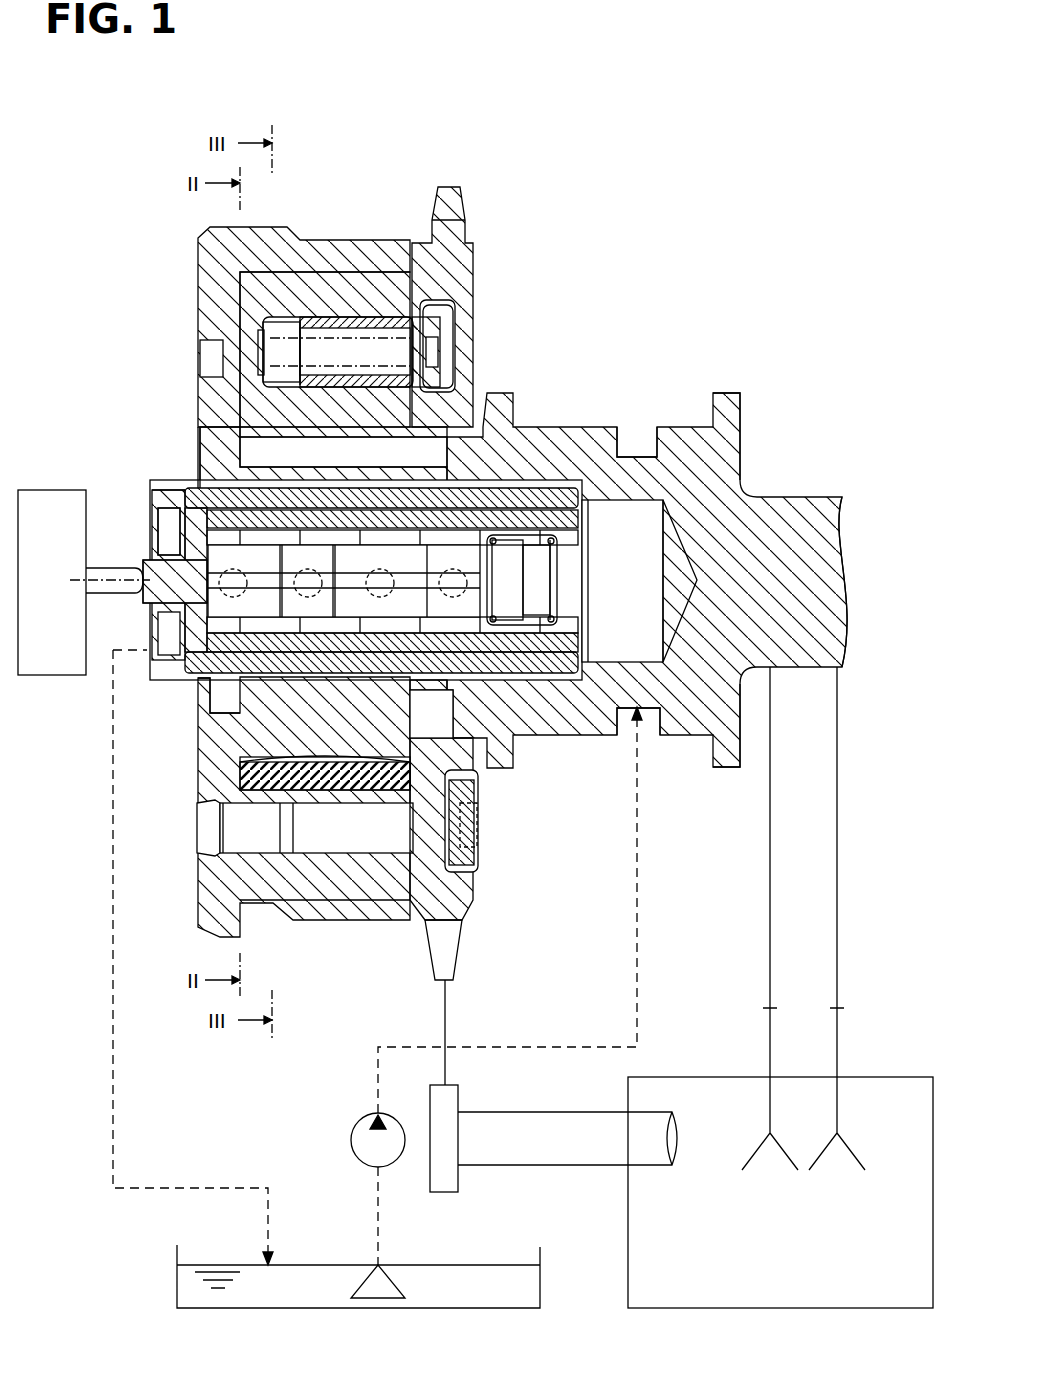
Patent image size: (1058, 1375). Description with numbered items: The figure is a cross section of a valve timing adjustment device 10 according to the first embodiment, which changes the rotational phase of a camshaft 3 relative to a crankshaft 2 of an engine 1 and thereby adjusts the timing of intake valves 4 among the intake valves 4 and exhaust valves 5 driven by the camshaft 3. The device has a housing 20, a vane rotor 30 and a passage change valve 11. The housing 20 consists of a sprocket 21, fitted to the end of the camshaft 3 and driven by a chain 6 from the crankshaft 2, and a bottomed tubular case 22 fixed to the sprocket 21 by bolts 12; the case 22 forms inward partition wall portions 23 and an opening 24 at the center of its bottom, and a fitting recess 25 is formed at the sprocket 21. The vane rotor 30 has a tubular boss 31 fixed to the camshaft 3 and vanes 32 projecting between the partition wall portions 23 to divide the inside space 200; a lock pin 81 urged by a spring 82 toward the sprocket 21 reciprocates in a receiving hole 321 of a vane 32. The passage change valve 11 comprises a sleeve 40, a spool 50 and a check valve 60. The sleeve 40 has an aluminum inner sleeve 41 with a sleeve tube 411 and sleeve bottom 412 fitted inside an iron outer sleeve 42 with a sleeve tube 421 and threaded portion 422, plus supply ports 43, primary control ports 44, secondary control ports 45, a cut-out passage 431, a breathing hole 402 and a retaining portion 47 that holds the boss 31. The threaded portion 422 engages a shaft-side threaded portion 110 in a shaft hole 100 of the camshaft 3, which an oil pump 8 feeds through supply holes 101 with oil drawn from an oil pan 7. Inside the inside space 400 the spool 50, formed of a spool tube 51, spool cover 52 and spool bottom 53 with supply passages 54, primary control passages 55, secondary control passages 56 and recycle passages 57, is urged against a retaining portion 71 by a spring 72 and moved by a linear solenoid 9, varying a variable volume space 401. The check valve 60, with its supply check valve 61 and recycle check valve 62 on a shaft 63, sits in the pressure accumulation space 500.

The engine 1 is at (893, 1076).
The crankshaft 2 is at (580, 1166).
The camshaft 3 is at (812, 500).
The intake valves 4 is at (770, 1098).
The exhaust valves 5 is at (838, 1098).
The chain 6 is at (447, 1015).
The oil pan 7 is at (177, 1280).
The oil pump 8 is at (351, 1140).
The linear solenoid 9 is at (55, 490).
The valve timing adjustment device 10 is at (560, 70).
The passage change valve 11 is at (118, 541).
The bolts 12 is at (478, 860).
The housing 20 is at (405, 214).
The sprocket 21 is at (450, 192).
The case 22 is at (304, 240).
The partition wall portions 23 is at (270, 800).
The opening 24 is at (186, 446).
The fitting recess 25 is at (453, 317).
The vane rotor 30 is at (354, 266).
The boss 31 is at (250, 758).
The vanes 32 is at (397, 308).
The sleeve 40 is at (512, 475).
The inner sleeve 41 is at (183, 510).
The outer sleeve 42 is at (157, 497).
The supply ports 43 is at (470, 478).
The primary control ports 44 is at (419, 313).
The secondary control ports 45 is at (258, 338).
The retaining portion 47 is at (210, 730).
The spool 50 is at (577, 680).
The spool tube 51 is at (420, 803).
The spool cover 52 is at (527, 600).
The spool bottom 53 is at (193, 610).
The supply passages 54 is at (543, 680).
The primary control passages 55 is at (475, 690).
The secondary control passages 56 is at (218, 703).
The recycle passages 57 is at (210, 803).
The check valve 60 is at (487, 585).
The supply check valve 61 is at (505, 690).
The recycle check valve 62 is at (247, 743).
The shaft 63 is at (187, 663).
The retaining portion 71 is at (187, 533).
The spring 72 is at (537, 633).
The lock pin 81 is at (430, 240).
The spring 82 is at (266, 296).
The shaft hole 100 is at (647, 478).
The supply holes 101 is at (627, 690).
The shaft-side threaded portion 110 is at (613, 470).
The inside space 200 is at (328, 298).
The receiving hole 321 is at (286, 452).
The inside space 400 is at (345, 605).
The variable volume space 401 is at (513, 567).
The breathing hole 402 is at (300, 605).
The sleeve tube 411 is at (153, 488).
The sleeve bottom 412 is at (540, 552).
The sleeve tube 421 is at (200, 443).
The threaded portion 422 is at (567, 478).
The cut-out passage 431 is at (537, 478).
The pressure accumulation space 500 is at (343, 583).